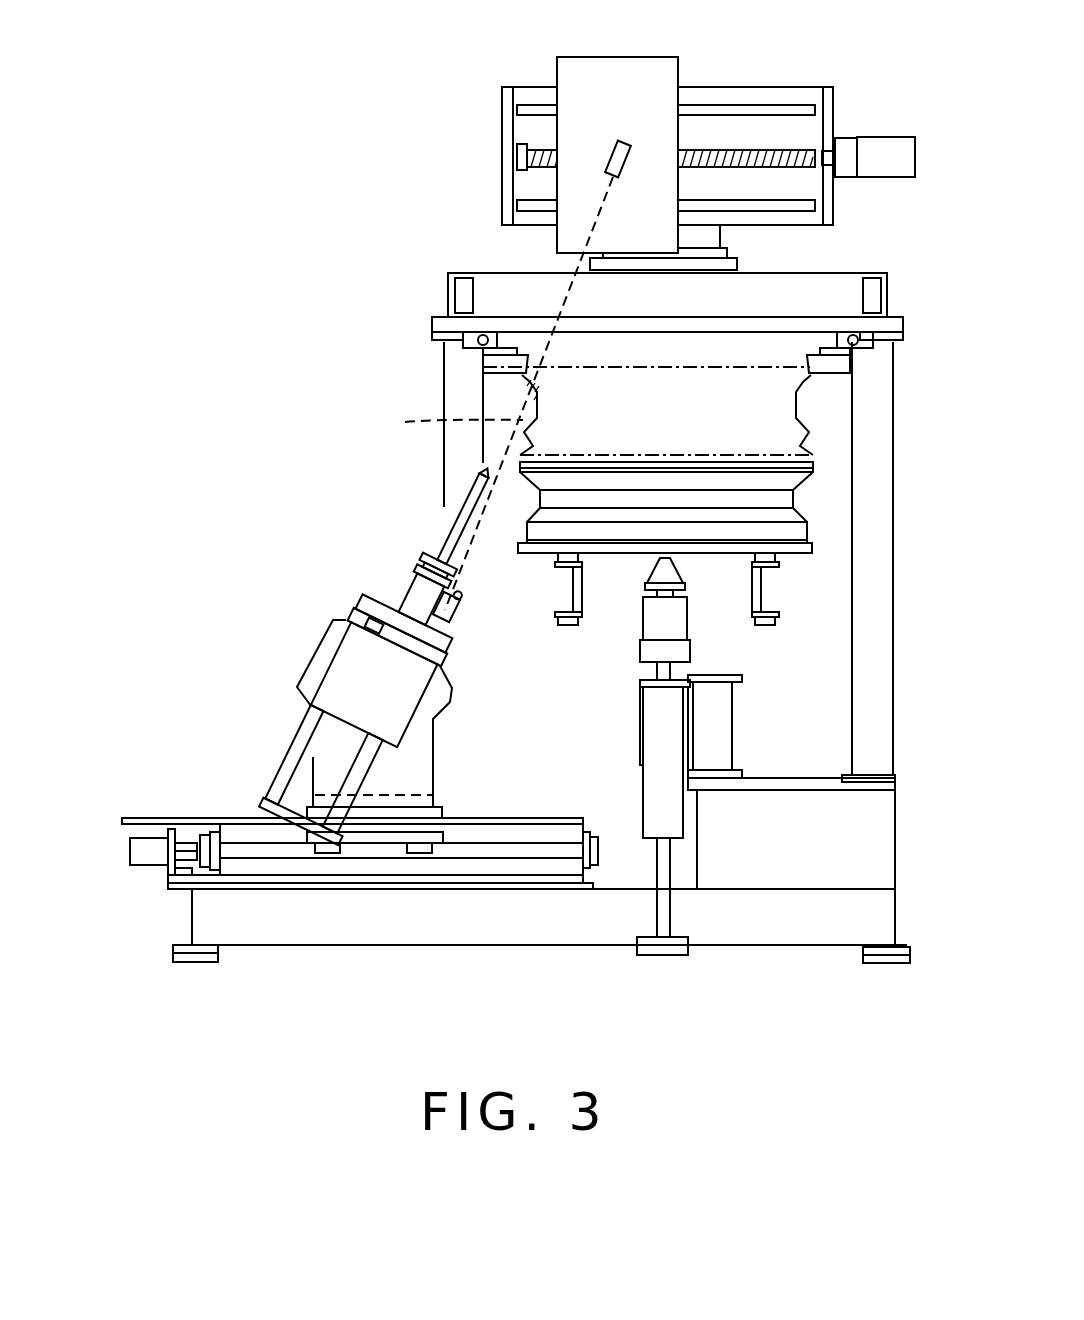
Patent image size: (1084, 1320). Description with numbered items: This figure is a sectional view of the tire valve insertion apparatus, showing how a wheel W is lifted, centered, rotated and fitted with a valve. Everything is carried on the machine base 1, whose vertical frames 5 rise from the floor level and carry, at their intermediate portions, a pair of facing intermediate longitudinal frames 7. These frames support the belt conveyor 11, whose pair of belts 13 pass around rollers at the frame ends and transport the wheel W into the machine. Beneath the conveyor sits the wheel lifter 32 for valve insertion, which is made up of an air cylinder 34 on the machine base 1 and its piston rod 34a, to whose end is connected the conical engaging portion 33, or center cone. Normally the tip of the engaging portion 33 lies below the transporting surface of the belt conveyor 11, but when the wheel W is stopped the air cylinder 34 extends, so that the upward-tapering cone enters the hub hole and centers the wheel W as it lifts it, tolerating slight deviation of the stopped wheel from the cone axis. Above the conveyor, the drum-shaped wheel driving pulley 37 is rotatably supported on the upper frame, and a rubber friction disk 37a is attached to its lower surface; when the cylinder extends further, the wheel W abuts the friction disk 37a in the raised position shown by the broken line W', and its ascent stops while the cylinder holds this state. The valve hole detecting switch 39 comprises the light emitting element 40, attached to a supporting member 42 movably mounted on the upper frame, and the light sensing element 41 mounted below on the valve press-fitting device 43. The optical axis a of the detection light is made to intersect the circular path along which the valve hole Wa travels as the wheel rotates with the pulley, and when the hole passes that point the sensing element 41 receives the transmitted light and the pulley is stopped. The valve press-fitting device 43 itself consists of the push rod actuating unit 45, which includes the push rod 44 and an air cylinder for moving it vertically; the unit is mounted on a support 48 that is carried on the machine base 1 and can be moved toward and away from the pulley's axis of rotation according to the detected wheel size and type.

The machine base 1 is at (443, 933).
The vertical frames 5 is at (453, 458).
The intermediate longitudinal frames 7 is at (573, 587).
The belt conveyor 11 is at (576, 638).
The belts 13 is at (567, 627).
The wheel lifter 32 is at (633, 750).
The engaging portion 33 is at (672, 577).
The air cylinder 34 is at (653, 712).
The piston rod 34a is at (673, 673).
The wheel driving pulley 37 is at (819, 345).
The friction disk 37a is at (490, 363).
The valve hole detecting switch 39 is at (428, 282).
The light emitting element 40 is at (627, 155).
The light sensing element 41 is at (448, 621).
The supporting member 42 is at (617, 72).
The valve press-fitting device 43 is at (322, 595).
The push rod 44 is at (450, 536).
The push rod actuating unit 45 is at (343, 662).
The support 48 is at (422, 755).
The wheel W is at (740, 504).
The raised wheel position W' is at (648, 391).
The valve hole Wa is at (540, 384).
The optical axis a is at (455, 421).